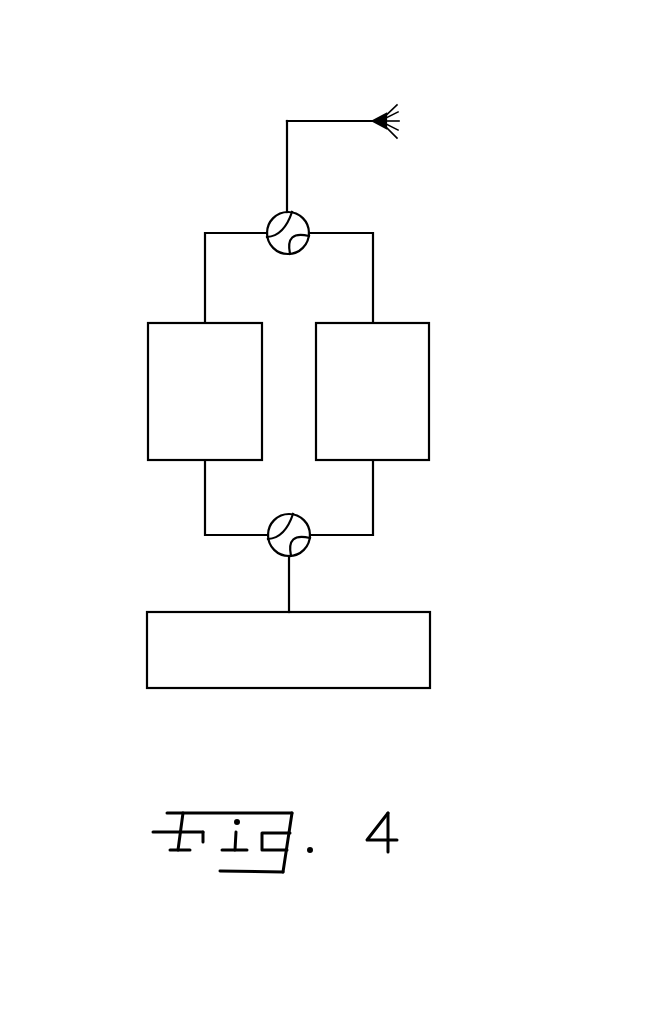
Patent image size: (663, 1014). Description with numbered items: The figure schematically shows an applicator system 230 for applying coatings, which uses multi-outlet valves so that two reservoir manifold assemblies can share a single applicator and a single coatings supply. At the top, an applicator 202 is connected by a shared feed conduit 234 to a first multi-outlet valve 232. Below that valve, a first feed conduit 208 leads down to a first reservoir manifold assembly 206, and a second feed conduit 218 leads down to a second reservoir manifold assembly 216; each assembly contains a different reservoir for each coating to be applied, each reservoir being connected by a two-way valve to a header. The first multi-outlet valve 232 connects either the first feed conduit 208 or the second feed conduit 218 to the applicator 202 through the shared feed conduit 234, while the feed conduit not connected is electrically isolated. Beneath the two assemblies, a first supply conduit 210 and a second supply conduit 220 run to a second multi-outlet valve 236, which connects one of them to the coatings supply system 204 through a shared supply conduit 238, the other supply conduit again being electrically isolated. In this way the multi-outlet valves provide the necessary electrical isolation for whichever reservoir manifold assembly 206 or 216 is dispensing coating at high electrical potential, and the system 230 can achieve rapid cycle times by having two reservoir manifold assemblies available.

The applicator system 230 is at (130, 140).
The applicator 202 is at (340, 121).
The shared feed conduit 234 is at (287, 162).
The first multi-outlet valve 232 is at (300, 223).
The first feed conduit 208 is at (205, 270).
The second feed conduit 218 is at (373, 263).
The first reservoir manifold assembly 206 is at (148, 370).
The second reservoir manifold assembly 216 is at (418, 373).
The first supply conduit 210 is at (206, 493).
The second supply conduit 220 is at (373, 503).
The second multi-outlet valve 236 is at (278, 550).
The shared supply conduit 238 is at (289, 587).
The coatings supply system 204 is at (415, 653).